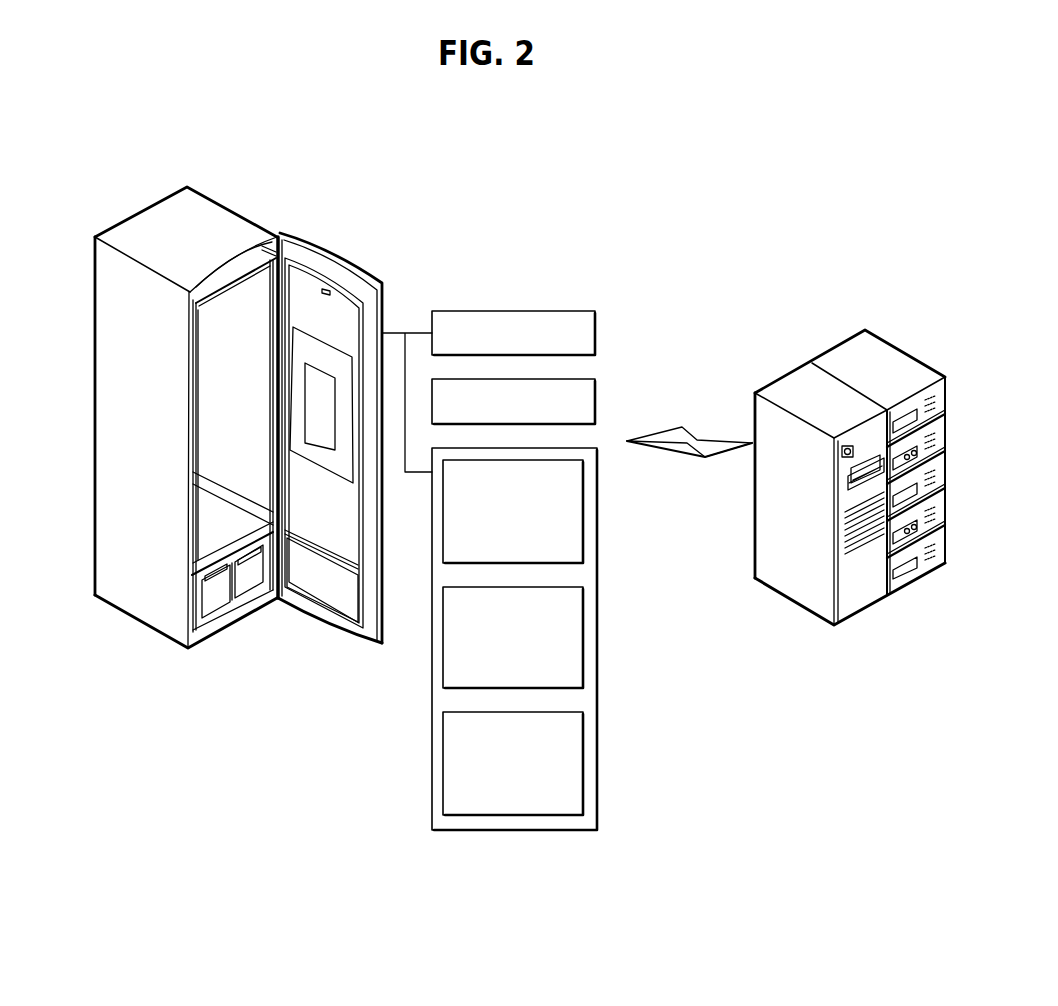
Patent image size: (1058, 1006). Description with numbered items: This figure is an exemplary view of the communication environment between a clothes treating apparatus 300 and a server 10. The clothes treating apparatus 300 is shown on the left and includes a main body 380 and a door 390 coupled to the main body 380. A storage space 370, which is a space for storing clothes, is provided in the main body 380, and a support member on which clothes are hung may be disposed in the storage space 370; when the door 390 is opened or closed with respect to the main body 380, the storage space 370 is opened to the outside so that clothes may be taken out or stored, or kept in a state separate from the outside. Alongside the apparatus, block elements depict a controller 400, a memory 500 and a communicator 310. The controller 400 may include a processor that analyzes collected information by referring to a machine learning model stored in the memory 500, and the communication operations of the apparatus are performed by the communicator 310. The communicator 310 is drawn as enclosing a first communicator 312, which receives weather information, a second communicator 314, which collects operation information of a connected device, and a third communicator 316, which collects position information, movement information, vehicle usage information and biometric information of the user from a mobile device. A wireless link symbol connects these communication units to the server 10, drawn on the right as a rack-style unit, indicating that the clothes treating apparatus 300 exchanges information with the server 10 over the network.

The server 10 is at (847, 355).
The clothes treating apparatus 300 is at (265, 181).
The communicator 310 is at (598, 698).
The first communicator 312 is at (584, 509).
The second communicator 314 is at (584, 636).
The third communicator 316 is at (584, 761).
The storage space 370 is at (213, 333).
The main body 380 is at (112, 380).
The door 390 is at (334, 253).
The controller 400 is at (596, 331).
The memory 500 is at (596, 399).